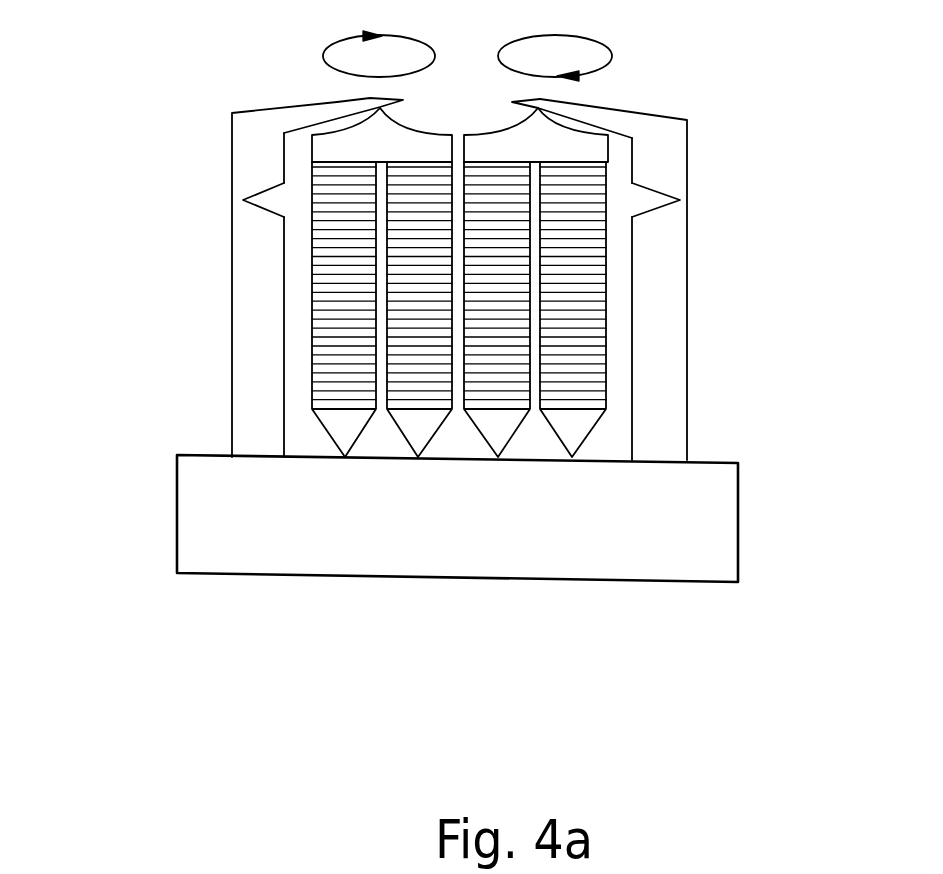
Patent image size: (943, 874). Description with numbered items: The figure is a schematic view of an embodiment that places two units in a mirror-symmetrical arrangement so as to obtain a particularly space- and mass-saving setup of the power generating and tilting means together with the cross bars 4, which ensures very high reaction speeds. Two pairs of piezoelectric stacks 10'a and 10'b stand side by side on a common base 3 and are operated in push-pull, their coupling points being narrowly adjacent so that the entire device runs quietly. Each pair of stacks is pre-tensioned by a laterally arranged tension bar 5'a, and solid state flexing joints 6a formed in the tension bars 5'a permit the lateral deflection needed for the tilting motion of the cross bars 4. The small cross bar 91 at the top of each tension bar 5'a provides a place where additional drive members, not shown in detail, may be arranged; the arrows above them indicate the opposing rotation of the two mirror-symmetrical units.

The cross bar 91 is at (402, 100).
The cross bar 4 is at (378, 142).
The solid state flexing joint 6a is at (243, 200).
The tension bar 5'a is at (467, 279).
The base 3 is at (240, 510).
The pair of stacks 10'a is at (351, 424).
The pair of stacks 10'b is at (534, 424).